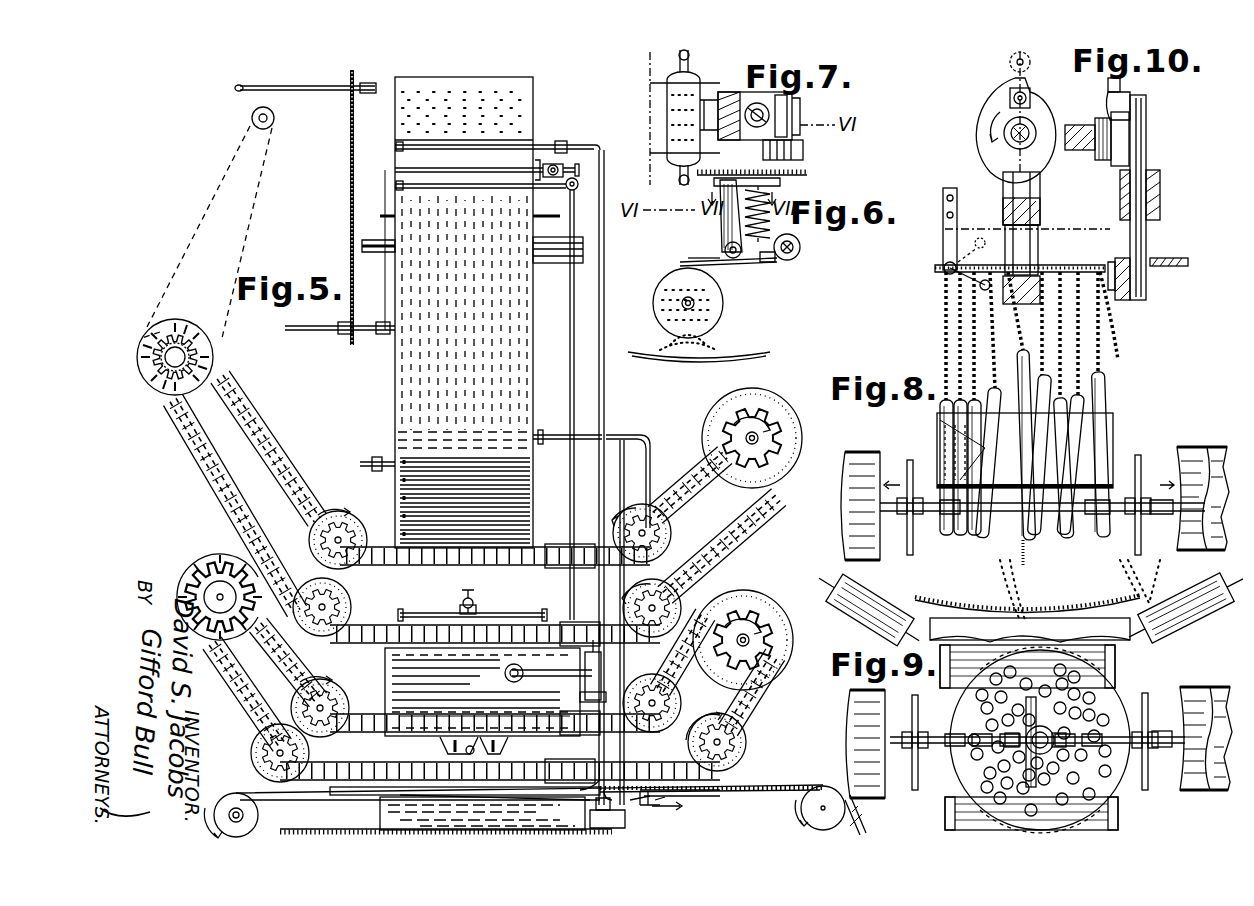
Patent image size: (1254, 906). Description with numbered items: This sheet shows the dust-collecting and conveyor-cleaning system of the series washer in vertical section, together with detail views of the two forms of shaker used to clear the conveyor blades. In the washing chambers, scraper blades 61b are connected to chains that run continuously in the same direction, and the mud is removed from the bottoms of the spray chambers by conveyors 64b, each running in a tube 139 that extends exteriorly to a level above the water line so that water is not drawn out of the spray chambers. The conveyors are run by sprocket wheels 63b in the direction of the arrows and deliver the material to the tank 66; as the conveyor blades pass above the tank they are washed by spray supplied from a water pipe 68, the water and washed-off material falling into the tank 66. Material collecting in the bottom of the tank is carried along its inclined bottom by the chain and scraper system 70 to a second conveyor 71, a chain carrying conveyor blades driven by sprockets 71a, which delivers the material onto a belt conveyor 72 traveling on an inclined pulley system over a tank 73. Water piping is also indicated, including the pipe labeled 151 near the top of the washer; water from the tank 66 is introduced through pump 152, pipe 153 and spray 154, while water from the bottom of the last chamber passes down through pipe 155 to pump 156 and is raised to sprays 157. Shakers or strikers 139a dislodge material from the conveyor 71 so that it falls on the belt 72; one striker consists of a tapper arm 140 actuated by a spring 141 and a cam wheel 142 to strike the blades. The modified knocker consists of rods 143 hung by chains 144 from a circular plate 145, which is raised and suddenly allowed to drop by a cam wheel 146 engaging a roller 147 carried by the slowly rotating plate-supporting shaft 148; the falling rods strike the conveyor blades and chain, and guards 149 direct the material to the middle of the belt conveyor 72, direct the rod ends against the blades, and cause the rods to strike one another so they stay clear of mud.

In FIG. 5, the scraper blades 61b is at (530, 487).
In FIG. 5, the sprocket wheels 63b is at (150, 350).
In FIG. 5, the conveyors 64b is at (232, 368).
In FIG. 9, the conveyors 64b is at (935, 710).
In FIG. 5, the tank 66 is at (385, 658).
In FIG. 5, the water pipe 68 is at (462, 600).
In FIG. 5, the chain and scraper system 70 is at (598, 702).
In FIG. 5, the second conveyor 71 is at (330, 670).
In FIG. 5, the sprockets 71a is at (217, 565).
In FIG. 5, the belt conveyor 72 is at (330, 796).
In FIG. 8, the belt conveyor 72 is at (900, 600).
In FIG. 5, the tank 73 is at (378, 820).
In FIG. 5, the tube 139 is at (266, 425).
In FIG. 8, the tube 139 is at (845, 517).
In FIG. 9, the tube 139 is at (860, 698).
In FIG. 5, the shakers or strikers 139a is at (442, 748).
In FIG. 7, the shakers or strikers 139a is at (667, 98).
In FIG. 6, the shakers or strikers 139a is at (680, 263).
In FIG. 7, the tapper arm 140 is at (704, 100).
In FIG. 6, the tapper arm 140 is at (765, 262).
In FIG. 7, the spring 141 is at (790, 112).
In FIG. 6, the spring 141 is at (745, 226).
In FIG. 7, the cam wheel 142 is at (805, 152).
In FIG. 6, the cam wheel 142 is at (800, 256).
In FIG. 8, the rods 143 is at (1108, 410).
In FIG. 9, the rods 143 is at (1088, 708).
In FIG. 8, the chains 144 is at (945, 316).
In FIG. 10, the circular plate 145 is at (1172, 258).
In FIG. 8, the circular plate 145 is at (1068, 264).
In FIG. 9, the circular plate 145 is at (1085, 778).
In FIG. 10, the cam wheel 146 is at (1110, 165).
In FIG. 8, the cam wheel 146 is at (995, 148).
In FIG. 10, the roller 147 is at (1148, 100).
In FIG. 8, the roller 147 is at (1030, 100).
In FIG. 10, the plate-supporting shaft 148 is at (1150, 152).
In FIG. 8, the plate-supporting shaft 148 is at (1030, 236).
In FIG. 8, the guards 149 is at (1112, 436).
In FIG. 9, the guards 149 is at (1116, 672).
In FIG. 5, the spray pipe with valve 151 is at (522, 167).
In FIG. 5, the pump 152 is at (600, 668).
In FIG. 5, the pipe 153 is at (580, 408).
In FIG. 5, the spray 154 is at (578, 193).
In FIG. 5, the pipe 155 is at (612, 433).
In FIG. 5, the pump 156 is at (628, 805).
In FIG. 5, the sprays 157 is at (510, 147).